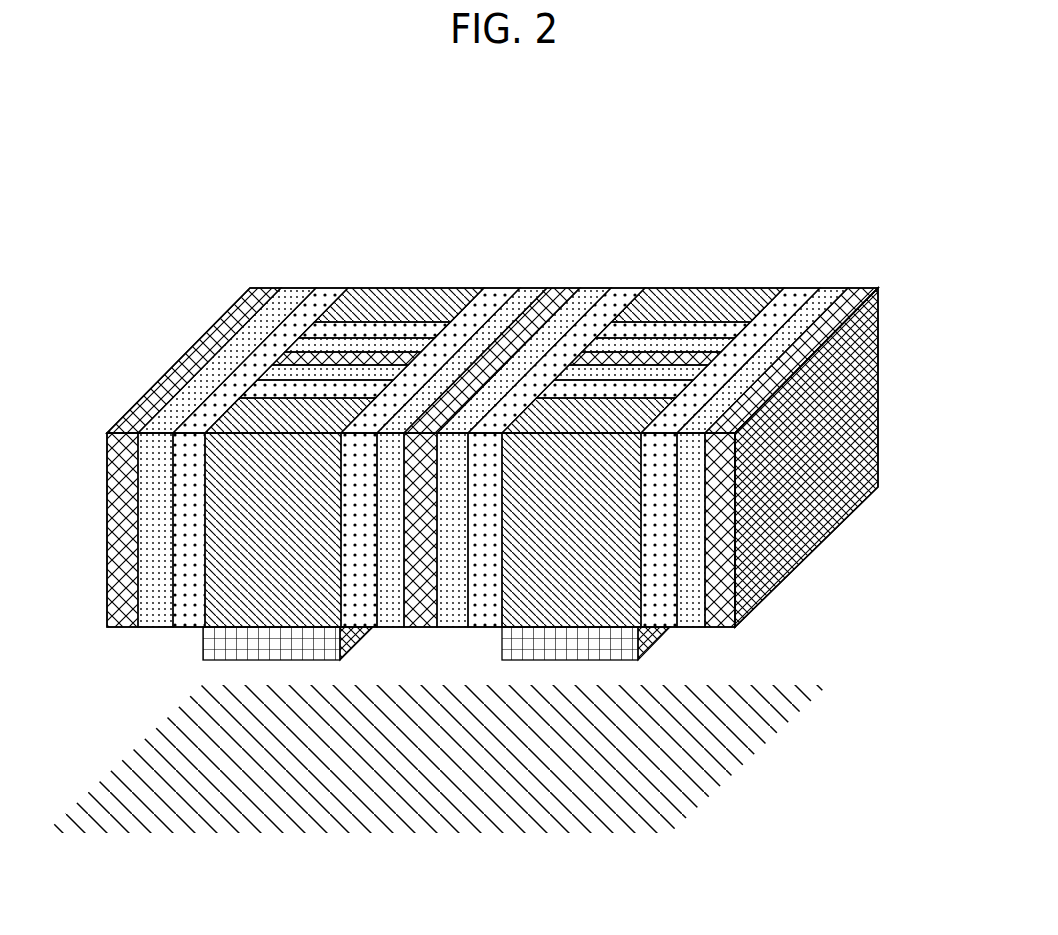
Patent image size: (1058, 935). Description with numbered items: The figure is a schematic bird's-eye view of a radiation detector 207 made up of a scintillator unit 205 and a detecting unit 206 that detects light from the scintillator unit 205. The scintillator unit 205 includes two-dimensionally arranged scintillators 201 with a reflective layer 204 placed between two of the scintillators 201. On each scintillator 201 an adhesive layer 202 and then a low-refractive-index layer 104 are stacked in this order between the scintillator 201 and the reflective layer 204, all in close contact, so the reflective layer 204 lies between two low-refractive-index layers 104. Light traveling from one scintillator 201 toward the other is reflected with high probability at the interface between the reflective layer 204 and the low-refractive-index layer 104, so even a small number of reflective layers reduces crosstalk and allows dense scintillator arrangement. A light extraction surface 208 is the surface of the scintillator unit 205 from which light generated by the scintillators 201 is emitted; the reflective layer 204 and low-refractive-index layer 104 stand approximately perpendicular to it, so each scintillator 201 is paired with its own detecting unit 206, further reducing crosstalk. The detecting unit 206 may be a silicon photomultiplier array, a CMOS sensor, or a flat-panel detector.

The low-refractive-index layer 104 is at (688, 345).
The scintillator 201 is at (752, 307).
The adhesive layer 202 is at (708, 330).
The reflective layer 204 is at (661, 358).
The scintillator unit 205 is at (826, 198).
The detecting unit 206 is at (640, 638).
The radiation detector 207 is at (874, 176).
The light extraction surface 208 is at (768, 713).